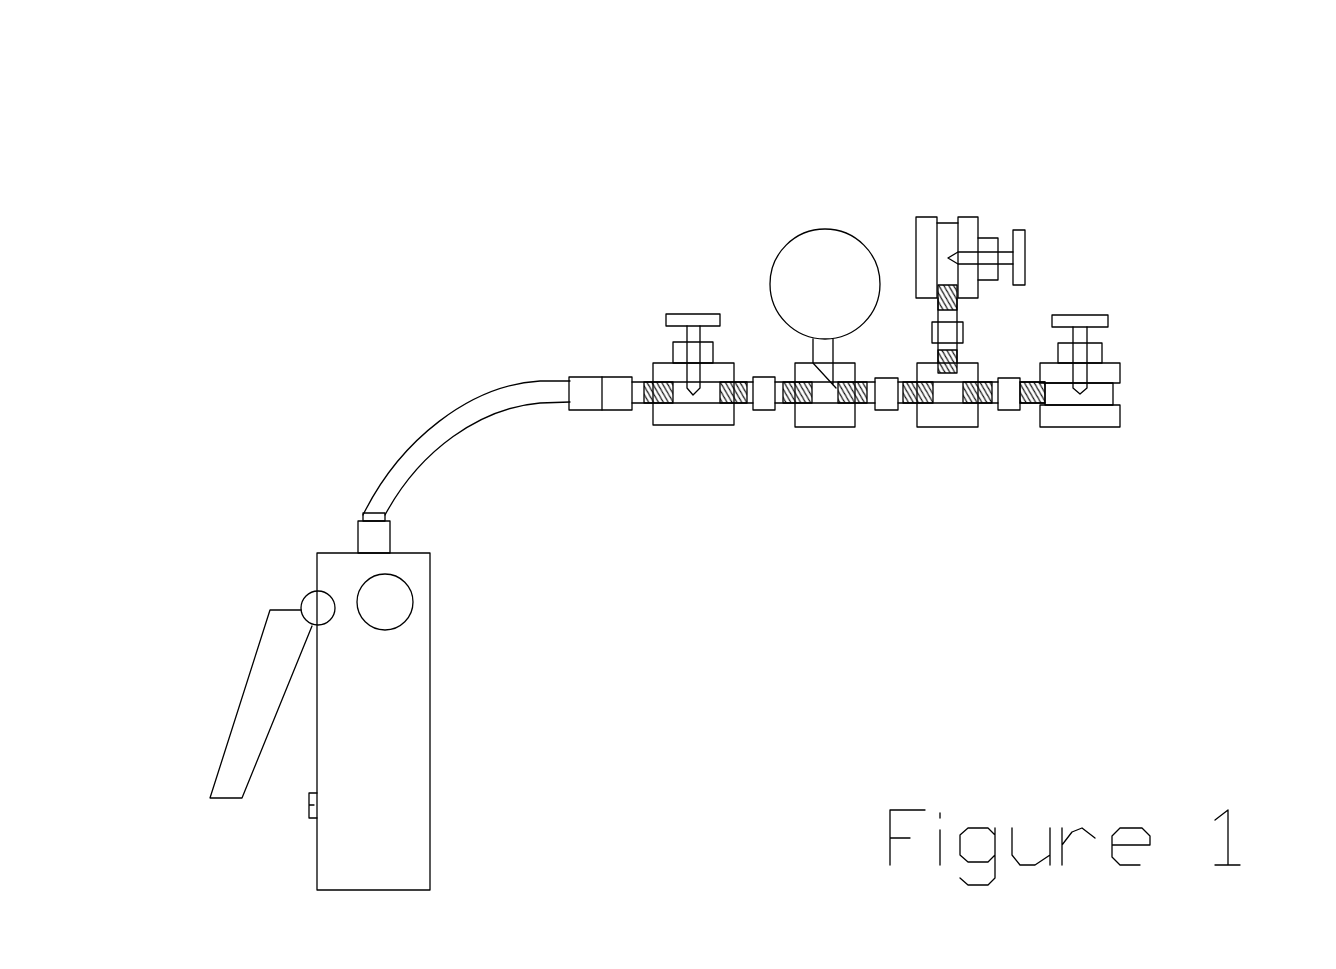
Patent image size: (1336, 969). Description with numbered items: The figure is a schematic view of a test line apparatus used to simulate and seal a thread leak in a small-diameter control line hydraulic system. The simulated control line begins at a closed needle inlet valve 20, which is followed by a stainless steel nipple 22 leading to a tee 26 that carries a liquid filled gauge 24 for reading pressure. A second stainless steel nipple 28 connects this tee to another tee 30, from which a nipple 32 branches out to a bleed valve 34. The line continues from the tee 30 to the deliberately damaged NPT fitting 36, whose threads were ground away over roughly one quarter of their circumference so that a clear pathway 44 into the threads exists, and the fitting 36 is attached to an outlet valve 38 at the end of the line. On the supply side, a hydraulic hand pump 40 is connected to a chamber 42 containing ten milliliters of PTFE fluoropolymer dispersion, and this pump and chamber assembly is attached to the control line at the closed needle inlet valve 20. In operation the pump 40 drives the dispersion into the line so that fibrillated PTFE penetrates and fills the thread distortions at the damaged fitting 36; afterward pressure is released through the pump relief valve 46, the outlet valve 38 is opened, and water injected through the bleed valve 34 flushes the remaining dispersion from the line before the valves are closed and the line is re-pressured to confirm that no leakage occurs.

The needle inlet valve 20 is at (697, 322).
The stainless steel nipple 22 is at (768, 410).
The liquid filled gauge 24 is at (818, 243).
The tee 26 is at (895, 527).
The stainless steel nipple 28 is at (888, 388).
The tee 30 is at (990, 540).
The nipple 32 is at (938, 328).
The bleed valve 34 is at (1025, 260).
The NPT fitting 36 is at (1185, 517).
The outlet valve 38 is at (1080, 323).
The hydraulic hand pump 40 is at (633, 750).
The chamber 42 is at (587, 402).
The pathway 44 is at (1033, 383).
The pump relief valve 46 is at (478, 645).